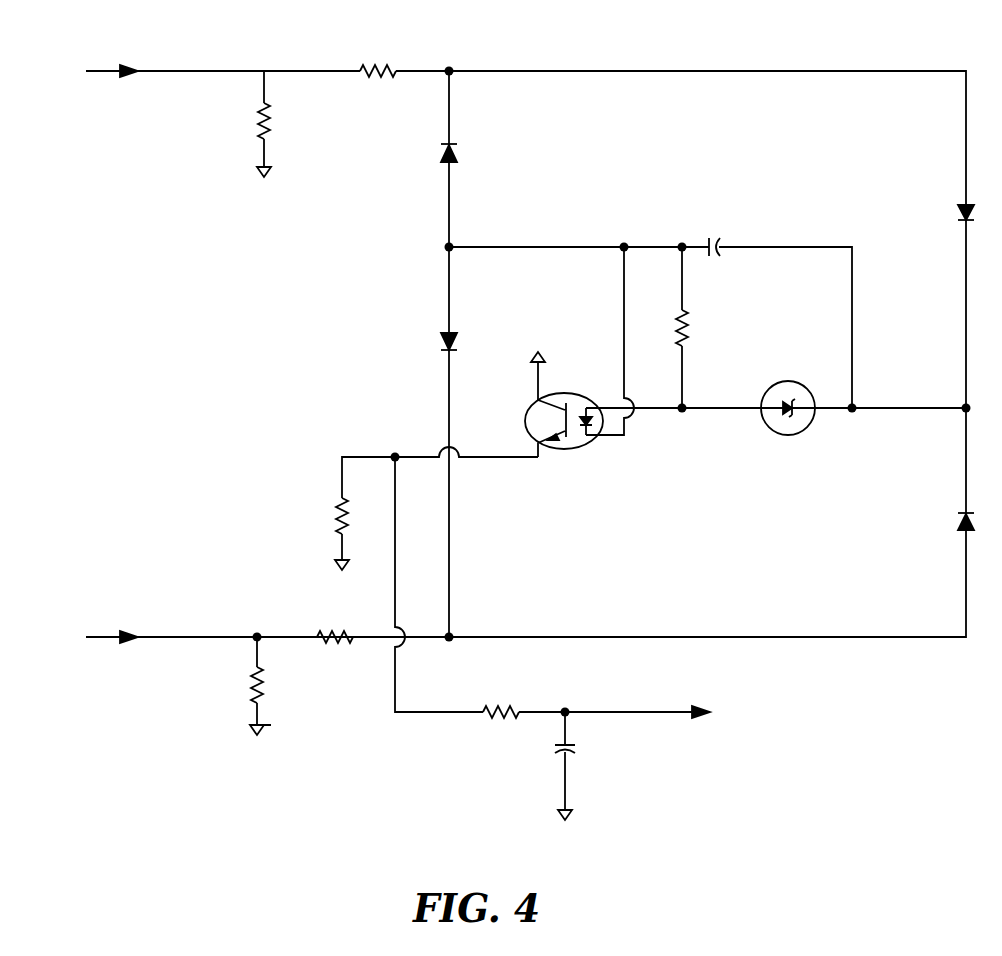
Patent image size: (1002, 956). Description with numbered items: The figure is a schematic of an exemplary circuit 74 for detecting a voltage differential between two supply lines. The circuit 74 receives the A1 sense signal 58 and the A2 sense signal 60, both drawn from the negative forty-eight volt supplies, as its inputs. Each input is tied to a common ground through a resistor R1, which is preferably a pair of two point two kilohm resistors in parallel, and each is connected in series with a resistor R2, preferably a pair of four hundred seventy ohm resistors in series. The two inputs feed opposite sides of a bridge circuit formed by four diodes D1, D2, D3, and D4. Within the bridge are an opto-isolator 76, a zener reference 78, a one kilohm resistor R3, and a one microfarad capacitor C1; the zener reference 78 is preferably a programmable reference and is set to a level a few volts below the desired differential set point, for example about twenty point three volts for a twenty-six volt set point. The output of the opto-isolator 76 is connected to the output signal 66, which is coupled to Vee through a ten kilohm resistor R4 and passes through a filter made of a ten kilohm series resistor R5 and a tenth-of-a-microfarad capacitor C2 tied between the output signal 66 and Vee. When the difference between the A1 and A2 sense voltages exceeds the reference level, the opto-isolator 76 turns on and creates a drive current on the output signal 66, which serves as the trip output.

The 48V A1 sense signal 58 is at (170, 71).
The -48V A2 sense signal 60 is at (165, 637).
The output signal 66 is at (625, 713).
The circuit 74 is at (272, 797).
The opto-isolator 76 is at (578, 447).
The zener reference 78 is at (790, 428).
The resistor R1 is at (270, 127).
The resistor R2 is at (380, 84).
The resistor R3 is at (690, 330).
The resistor R4 is at (335, 510).
The resistor R5 is at (490, 722).
The capacitor C1 is at (718, 243).
The capacitor C2 is at (578, 747).
The diode D1 is at (455, 155).
The diode D2 is at (458, 333).
The diode D3 is at (960, 213).
The diode D4 is at (960, 520).